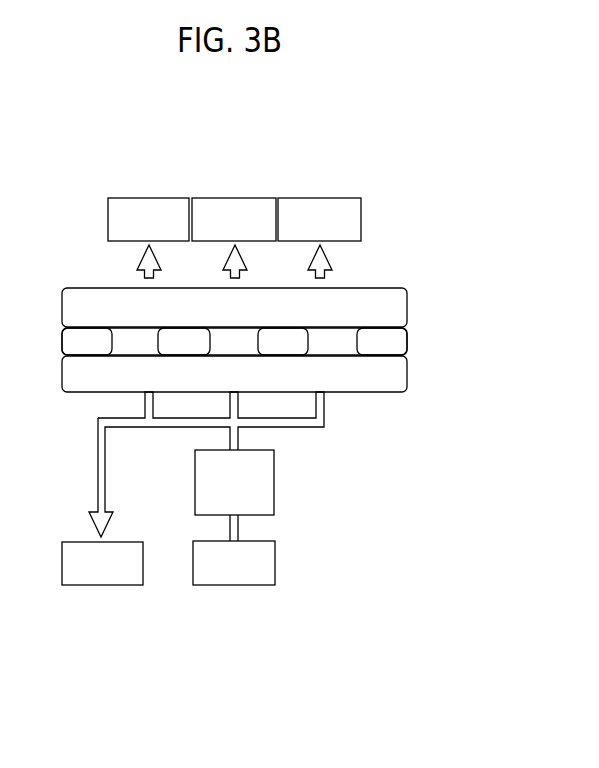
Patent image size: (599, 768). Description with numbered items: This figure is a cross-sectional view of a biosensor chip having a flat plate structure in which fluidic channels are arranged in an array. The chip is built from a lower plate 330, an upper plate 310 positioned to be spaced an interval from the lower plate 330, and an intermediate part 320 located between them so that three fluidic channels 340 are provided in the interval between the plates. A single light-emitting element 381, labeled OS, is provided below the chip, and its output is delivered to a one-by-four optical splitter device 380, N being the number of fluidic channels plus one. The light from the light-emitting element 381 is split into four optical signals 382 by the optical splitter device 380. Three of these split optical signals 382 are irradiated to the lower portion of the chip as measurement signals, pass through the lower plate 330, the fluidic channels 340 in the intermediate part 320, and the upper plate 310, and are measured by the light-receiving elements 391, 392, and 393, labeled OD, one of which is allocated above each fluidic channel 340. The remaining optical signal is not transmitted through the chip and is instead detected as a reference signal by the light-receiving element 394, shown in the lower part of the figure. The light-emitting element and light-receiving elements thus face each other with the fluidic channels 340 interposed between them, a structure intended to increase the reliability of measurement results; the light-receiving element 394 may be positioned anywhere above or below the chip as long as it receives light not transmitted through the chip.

The upper plate 310 is at (407, 303).
The intermediate part 320 is at (407, 338).
The lower plate 330 is at (407, 376).
The fluidic channel 340 is at (132, 337).
The optical splitter device 380 is at (274, 493).
The light-emitting element 381 is at (260, 585).
The optical signals 382 is at (238, 437).
The light-receiving element 391 is at (180, 195).
The light-receiving element 392 is at (266, 195).
The light-receiving element 393 is at (349, 195).
The light-receiving element 394 is at (123, 585).